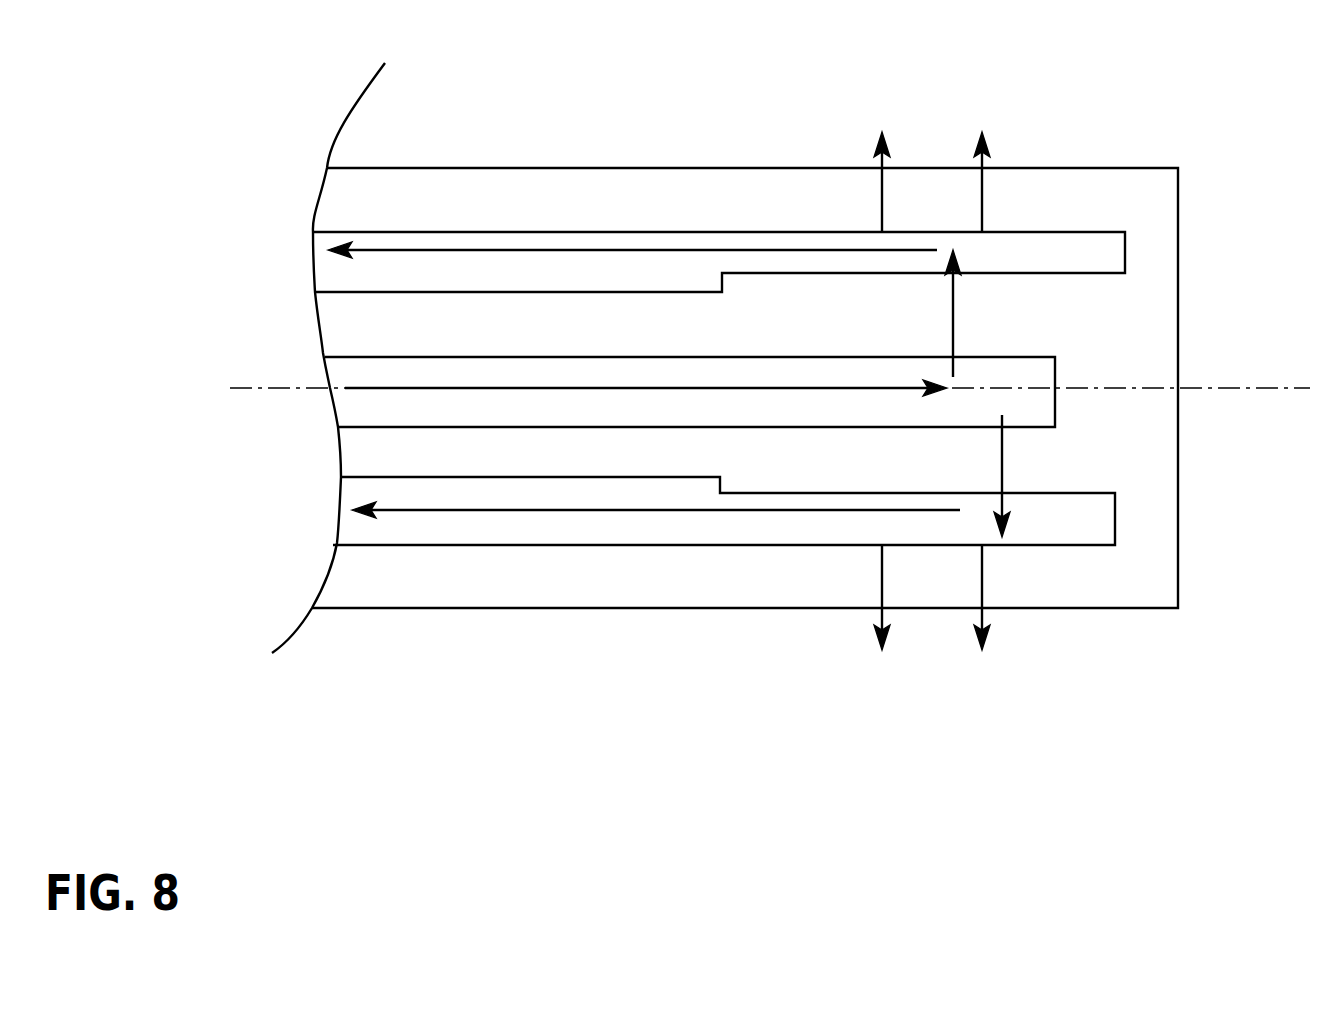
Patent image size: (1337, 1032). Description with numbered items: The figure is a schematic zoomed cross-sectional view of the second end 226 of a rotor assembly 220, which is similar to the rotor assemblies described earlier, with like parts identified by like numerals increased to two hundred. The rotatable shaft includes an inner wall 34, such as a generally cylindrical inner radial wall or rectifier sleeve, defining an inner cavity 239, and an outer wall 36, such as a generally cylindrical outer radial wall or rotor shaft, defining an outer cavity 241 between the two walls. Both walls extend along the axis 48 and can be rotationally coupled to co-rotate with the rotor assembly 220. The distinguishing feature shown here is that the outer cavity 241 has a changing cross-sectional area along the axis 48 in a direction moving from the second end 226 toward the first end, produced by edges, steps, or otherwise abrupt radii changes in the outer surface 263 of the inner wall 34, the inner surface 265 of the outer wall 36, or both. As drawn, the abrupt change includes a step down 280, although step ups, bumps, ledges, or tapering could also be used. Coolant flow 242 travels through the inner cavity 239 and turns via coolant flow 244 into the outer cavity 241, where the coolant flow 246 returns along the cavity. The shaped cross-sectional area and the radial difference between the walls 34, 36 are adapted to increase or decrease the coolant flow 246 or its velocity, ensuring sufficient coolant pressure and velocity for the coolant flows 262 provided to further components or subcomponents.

The inner wall 34 is at (378, 317).
The outer wall 36 is at (398, 198).
The axis 48 is at (1216, 386).
The rotor assembly 220 is at (676, 66).
The second end 226 is at (1235, 125).
The inner cavity 239 is at (444, 366).
The outer cavity 241 is at (1060, 252).
The coolant flow 242 is at (687, 388).
The coolant flow 244 is at (953, 317).
The coolant flow 246 is at (550, 248).
The coolant flow 262 is at (885, 162).
The outer surface 263 is at (590, 290).
The inner surface 265 is at (637, 236).
The step down 280 is at (712, 252).